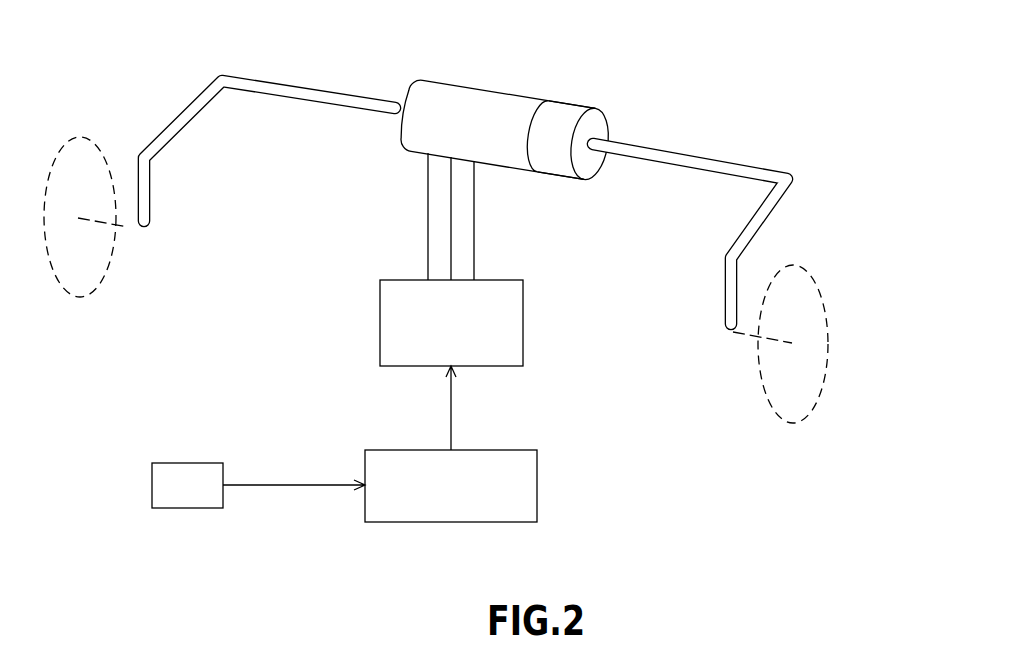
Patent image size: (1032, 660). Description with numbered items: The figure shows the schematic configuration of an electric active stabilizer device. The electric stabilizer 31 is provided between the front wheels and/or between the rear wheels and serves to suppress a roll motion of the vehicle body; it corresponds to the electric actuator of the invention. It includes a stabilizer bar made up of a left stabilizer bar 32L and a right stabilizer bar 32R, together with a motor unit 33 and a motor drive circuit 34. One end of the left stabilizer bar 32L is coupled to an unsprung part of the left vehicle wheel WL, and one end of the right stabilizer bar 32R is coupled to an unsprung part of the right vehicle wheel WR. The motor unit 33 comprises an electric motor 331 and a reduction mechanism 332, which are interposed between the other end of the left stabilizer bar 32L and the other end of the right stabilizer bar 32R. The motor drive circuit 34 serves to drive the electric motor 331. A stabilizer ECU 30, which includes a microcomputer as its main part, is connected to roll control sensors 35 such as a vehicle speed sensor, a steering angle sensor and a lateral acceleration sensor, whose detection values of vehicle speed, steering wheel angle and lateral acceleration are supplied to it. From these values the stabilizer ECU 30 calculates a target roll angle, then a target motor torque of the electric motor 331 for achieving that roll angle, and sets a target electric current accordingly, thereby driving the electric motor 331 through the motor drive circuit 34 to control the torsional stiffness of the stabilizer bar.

The stabilizer ECU 30 is at (480, 450).
The electric stabilizer 31 is at (282, 330).
The left stabilizer bar 32L is at (302, 84).
The right stabilizer bar 32R is at (732, 165).
The motor unit 33 is at (547, 112).
The electric motor 331 is at (497, 93).
The reduction mechanism 332 is at (560, 105).
The motor drive circuit 34 is at (525, 312).
The roll control sensors 35 is at (185, 463).
The left vehicle wheel WL is at (83, 138).
The right vehicle wheel WR is at (826, 294).